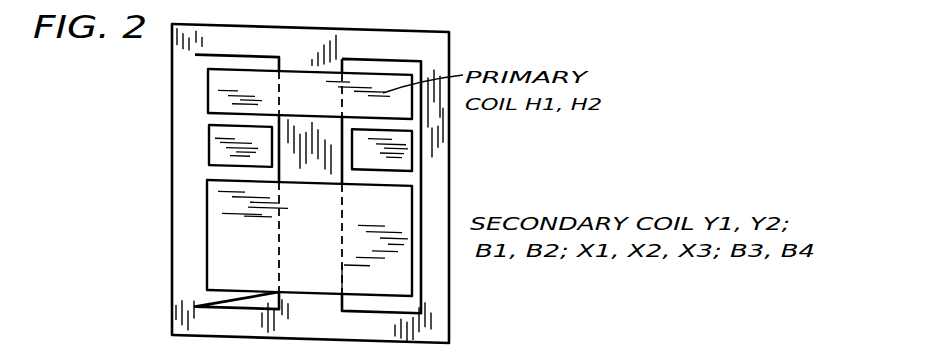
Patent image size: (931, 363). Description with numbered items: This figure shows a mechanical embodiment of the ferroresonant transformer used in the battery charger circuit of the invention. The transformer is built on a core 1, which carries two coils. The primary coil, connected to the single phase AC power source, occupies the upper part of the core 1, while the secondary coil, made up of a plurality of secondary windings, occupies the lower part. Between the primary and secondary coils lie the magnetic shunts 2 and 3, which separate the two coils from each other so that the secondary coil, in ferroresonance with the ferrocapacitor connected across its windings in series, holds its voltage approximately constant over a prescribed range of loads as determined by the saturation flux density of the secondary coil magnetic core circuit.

The core 1 is at (356, 43).
The magnetic shunt 2 is at (215, 158).
The magnetic shunt 3 is at (403, 147).